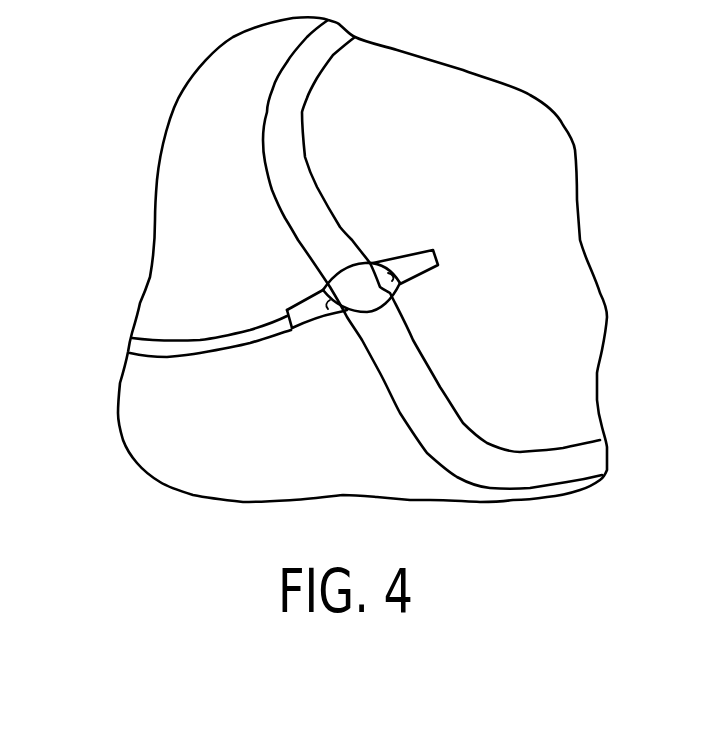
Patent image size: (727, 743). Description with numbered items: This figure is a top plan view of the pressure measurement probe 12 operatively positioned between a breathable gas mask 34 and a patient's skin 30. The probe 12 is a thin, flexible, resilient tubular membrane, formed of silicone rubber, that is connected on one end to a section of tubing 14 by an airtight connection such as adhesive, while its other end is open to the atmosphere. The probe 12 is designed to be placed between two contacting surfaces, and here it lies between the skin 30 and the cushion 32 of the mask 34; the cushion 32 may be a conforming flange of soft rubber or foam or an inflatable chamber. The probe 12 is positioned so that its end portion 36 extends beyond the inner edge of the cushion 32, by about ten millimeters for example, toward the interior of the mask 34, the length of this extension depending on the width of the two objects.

The skin 30 is at (173, 280).
The cushion 32 is at (307, 225).
The breathable gas mask 34 is at (260, 160).
The tubing 14 is at (197, 347).
The probe 12 is at (305, 317).
The end portion 36 is at (421, 262).